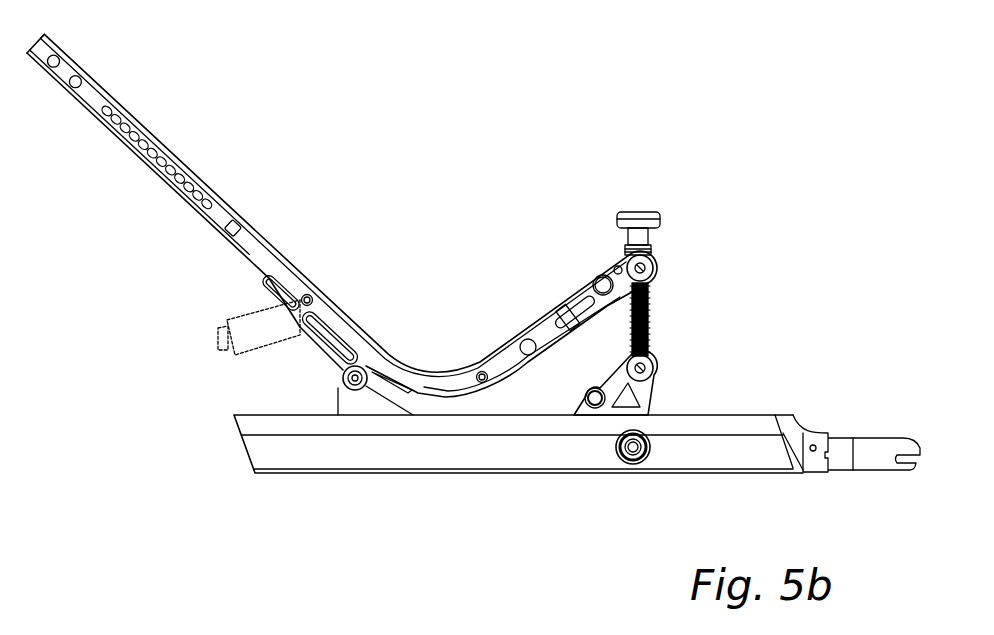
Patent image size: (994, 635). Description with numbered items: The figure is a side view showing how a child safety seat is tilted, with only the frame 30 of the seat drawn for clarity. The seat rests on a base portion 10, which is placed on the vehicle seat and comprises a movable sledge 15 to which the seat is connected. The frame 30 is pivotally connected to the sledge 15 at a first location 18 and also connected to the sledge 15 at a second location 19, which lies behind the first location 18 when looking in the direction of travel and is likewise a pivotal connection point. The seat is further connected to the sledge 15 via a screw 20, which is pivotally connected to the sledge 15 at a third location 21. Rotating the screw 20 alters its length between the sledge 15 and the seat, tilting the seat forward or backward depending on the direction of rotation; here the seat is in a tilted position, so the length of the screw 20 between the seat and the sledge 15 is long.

The base portion 10 is at (767, 452).
The sledge 15 is at (612, 408).
The first location 18 is at (352, 384).
The second location 19 is at (620, 266).
The screw 20 is at (641, 318).
The third location 21 is at (643, 372).
The frame 30 is at (252, 250).